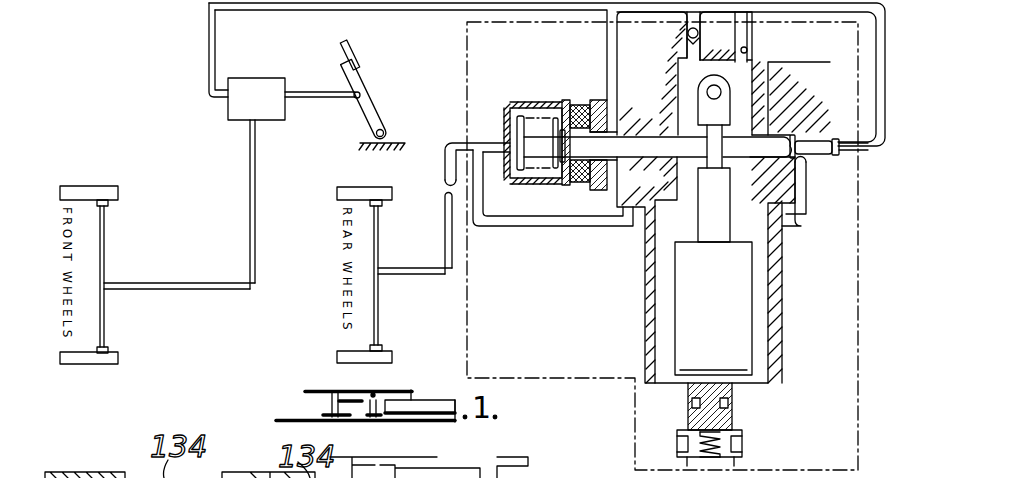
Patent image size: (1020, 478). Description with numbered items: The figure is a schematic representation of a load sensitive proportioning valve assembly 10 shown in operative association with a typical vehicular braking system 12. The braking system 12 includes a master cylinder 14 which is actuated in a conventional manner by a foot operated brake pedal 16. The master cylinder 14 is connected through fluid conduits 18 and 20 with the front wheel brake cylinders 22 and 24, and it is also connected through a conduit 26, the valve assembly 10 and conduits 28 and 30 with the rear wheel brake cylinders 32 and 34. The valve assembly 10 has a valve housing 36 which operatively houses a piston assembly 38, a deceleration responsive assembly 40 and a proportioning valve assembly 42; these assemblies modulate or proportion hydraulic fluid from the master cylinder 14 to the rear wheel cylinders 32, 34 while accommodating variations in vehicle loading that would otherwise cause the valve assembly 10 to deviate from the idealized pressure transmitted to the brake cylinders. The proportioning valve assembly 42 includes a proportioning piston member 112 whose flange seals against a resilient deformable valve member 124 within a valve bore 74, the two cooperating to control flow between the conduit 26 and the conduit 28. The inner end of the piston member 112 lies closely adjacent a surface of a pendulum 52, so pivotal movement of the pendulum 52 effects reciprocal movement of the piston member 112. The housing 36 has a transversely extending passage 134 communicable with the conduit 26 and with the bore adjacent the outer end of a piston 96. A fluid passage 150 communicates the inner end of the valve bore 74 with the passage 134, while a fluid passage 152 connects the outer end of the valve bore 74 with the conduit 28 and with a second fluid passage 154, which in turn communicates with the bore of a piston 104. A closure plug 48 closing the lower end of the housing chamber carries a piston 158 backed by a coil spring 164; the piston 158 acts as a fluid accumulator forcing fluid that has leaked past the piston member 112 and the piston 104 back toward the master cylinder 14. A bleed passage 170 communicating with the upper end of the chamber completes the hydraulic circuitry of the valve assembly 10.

The load sensitive proportioning valve assembly 10 is at (864, 374).
The vehicular braking system 12 is at (231, 178).
The master cylinder 14 is at (257, 86).
The brake pedal 16 is at (372, 115).
The fluid conduit 18 is at (256, 230).
The fluid conduit 20 is at (104, 262).
The front wheel brake cylinder 22 is at (108, 203).
The front wheel brake cylinder 24 is at (108, 347).
The conduit 26 is at (207, 36).
The conduit 28 is at (434, 274).
The conduit 30 is at (378, 314).
The rear wheel brake cylinder 32 is at (382, 204).
The rear wheel brake cylinder 34 is at (382, 349).
The valve housing 36 is at (771, 264).
The piston assembly 38 is at (784, 132).
The deceleration responsive assembly 40 is at (673, 284).
The proportioning valve assembly 42 is at (598, 118).
The closure plug 48 is at (752, 458).
The pendulum 52 is at (696, 215).
The valve bore 74 is at (540, 179).
The piston 96 is at (828, 158).
The piston 104 is at (766, 136).
The proportioning piston member 112 is at (612, 158).
The valve member 124 is at (592, 112).
The transversely extending bore or passage 134 is at (690, 39).
The fluid passage 150 is at (620, 101).
The fluid passage 152 is at (508, 138).
The second fluid passage 154 is at (806, 165).
The piston 158 is at (736, 399).
The coil spring 164 is at (678, 446).
The bleed passage 170 is at (748, 50).